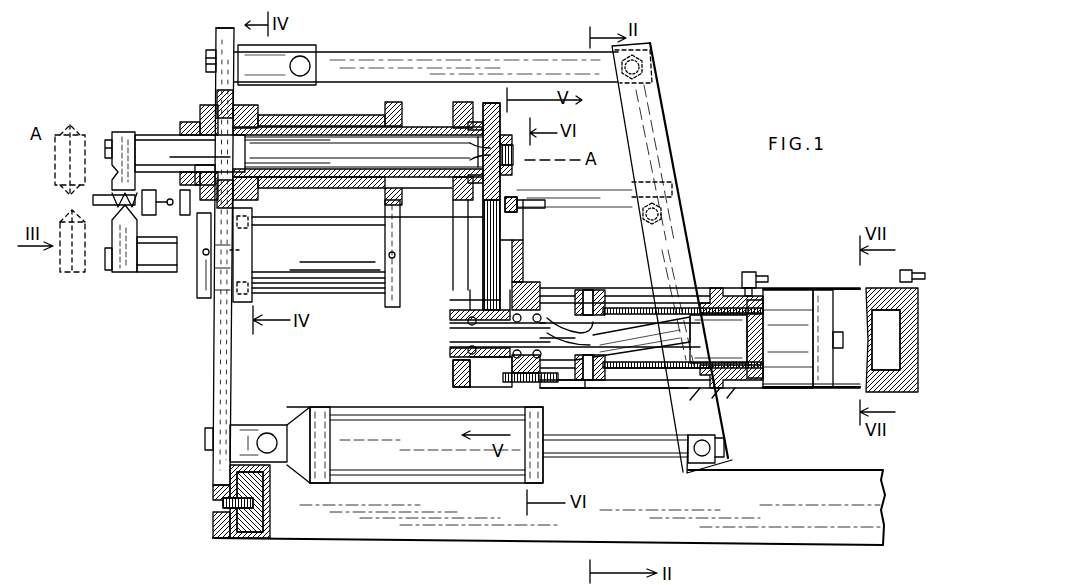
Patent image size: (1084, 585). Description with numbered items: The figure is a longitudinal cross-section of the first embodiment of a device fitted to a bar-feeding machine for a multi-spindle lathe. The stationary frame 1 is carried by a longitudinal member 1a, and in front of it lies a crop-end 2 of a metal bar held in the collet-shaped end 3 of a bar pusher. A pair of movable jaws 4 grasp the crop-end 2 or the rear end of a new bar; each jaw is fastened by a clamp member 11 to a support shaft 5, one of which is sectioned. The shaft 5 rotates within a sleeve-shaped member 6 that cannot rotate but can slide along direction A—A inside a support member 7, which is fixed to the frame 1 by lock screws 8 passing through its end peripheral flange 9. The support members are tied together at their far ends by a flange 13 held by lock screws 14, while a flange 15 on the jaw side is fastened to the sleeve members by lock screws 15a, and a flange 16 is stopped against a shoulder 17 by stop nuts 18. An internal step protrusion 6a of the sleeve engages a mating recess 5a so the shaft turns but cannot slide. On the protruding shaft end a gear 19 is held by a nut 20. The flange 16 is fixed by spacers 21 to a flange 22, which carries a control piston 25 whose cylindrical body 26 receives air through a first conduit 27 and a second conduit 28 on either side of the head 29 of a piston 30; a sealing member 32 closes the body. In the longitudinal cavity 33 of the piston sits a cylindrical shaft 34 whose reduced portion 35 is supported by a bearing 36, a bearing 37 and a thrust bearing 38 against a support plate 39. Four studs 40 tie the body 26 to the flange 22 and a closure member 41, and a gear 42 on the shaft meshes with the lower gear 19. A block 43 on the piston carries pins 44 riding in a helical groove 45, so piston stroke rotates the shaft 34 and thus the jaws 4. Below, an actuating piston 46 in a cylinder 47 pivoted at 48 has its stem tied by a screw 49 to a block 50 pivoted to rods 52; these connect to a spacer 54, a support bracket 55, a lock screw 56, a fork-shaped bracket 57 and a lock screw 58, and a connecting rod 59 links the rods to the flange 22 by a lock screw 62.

The stationary frame 1 is at (218, 370).
The longitudinal member 1a is at (312, 523).
The crop-end 2 is at (100, 195).
The collet-shaped end of bar pusher 3 is at (160, 205).
The movable jaws 4 is at (125, 135).
The support shaft 5 is at (188, 145).
The mating recess 5a is at (262, 160).
The sleeve-shaped member 6 is at (328, 182).
The internal step protrusion 6a is at (262, 117).
The support member 7 is at (365, 118).
The lock screws 8 is at (180, 270).
The end peripheral flange 9 is at (247, 104).
The clamp member 11 is at (200, 125).
The flange 13 is at (410, 70).
The lock screws 14 is at (390, 252).
The flange 15 is at (206, 107).
The lock screws 15a is at (206, 280).
The flange 16 is at (460, 108).
The shoulder 17 is at (433, 128).
The stop nuts 18 is at (492, 105).
The gear 19 is at (505, 135).
The nut 20 is at (500, 130).
The spacer 21 is at (510, 196).
The flange 22 is at (528, 268).
The control piston 25 is at (729, 263).
The cylindrical body 26 is at (805, 288).
The first conduit 27 is at (757, 272).
The second conduit 28 is at (910, 268).
The piston head 29 is at (828, 300).
The piston 30 is at (805, 388).
The sealing member 32 is at (768, 375).
The longitudinal cavity 33 is at (729, 349).
The cylindrical shaft 34 is at (652, 350).
The reduced-diameter portion 35 is at (452, 343).
The bearing 36 is at (452, 314).
The bearing 37 is at (530, 292).
The thrust bearing 38 is at (540, 352).
The support plate 39 is at (562, 386).
The studs 40 is at (700, 288).
The closure member 41 is at (728, 395).
The gear 42 is at (453, 372).
The block 43 is at (598, 380).
The pins 44 is at (590, 290).
The shaped groove 45 is at (612, 318).
The actuating piston 46 is at (386, 425).
The cylinder 47 is at (340, 445).
The pivot / stem 48 is at (268, 433).
The screw 49 is at (727, 452).
The block 50 is at (720, 467).
The rods 52 is at (650, 104).
The spacer 54 is at (655, 48).
The support bracket 55 is at (597, 69).
The lock screw 56 is at (302, 58).
The fork-shaped bracket 57 is at (243, 48).
The lock screw 58 is at (206, 60).
The connecting rod 59 is at (630, 195).
The lock screw 62 is at (548, 199).